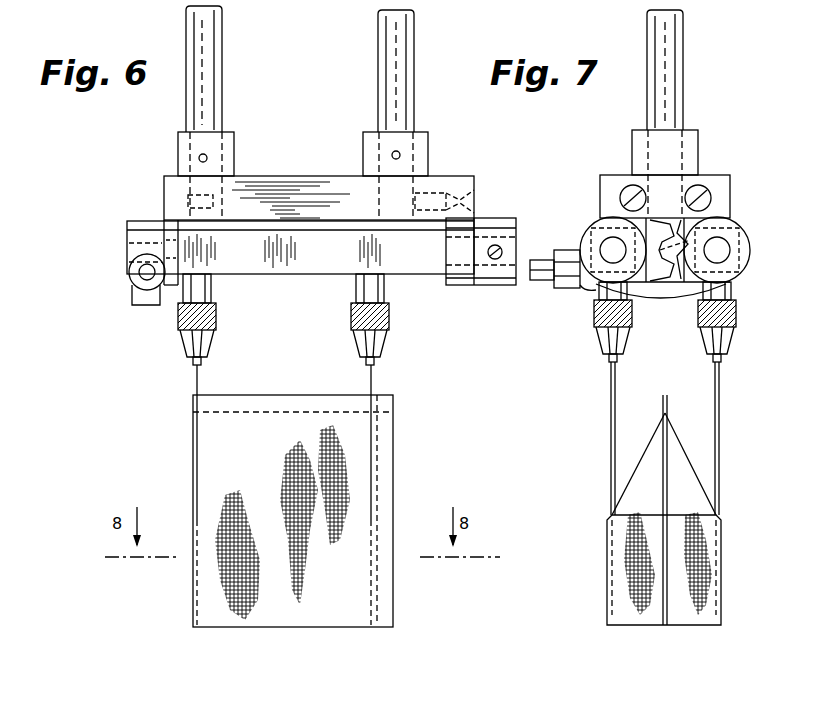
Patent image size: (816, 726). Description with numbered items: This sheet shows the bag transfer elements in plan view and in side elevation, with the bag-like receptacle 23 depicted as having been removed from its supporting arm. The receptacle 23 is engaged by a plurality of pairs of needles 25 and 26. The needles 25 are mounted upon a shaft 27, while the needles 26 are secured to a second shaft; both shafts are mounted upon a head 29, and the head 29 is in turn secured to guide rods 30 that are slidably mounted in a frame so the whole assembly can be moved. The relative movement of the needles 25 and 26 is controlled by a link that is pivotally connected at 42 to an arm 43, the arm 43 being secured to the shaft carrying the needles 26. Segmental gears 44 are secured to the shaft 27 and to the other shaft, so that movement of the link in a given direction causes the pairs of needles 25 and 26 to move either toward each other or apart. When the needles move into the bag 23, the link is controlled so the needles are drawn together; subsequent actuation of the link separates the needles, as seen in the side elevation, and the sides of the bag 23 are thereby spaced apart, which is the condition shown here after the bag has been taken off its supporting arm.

In FIG. 6, the bag-like receptacle 23 is at (275, 600).
In FIG. 7, the bag-like receptacle 23 is at (655, 605).
In FIG. 6, the needles 25 is at (371, 380).
In FIG. 7, the needles 25 is at (611, 402).
In FIG. 7, the needles 26 is at (719, 418).
In FIG. 6, the shaft 27 is at (325, 258).
In FIG. 6, the head 29 is at (258, 193).
In FIG. 6, the guide rods 30 is at (397, 108).
In FIG. 7, the guide rods 30 is at (668, 95).
In FIG. 6, the pivot connection 42 is at (147, 272).
In FIG. 7, the pivot connection 42 is at (541, 266).
In FIG. 6, the arm 43 is at (140, 296).
In FIG. 7, the arm 43 is at (590, 285).
In FIG. 7, the segmental gears 44 is at (647, 225).